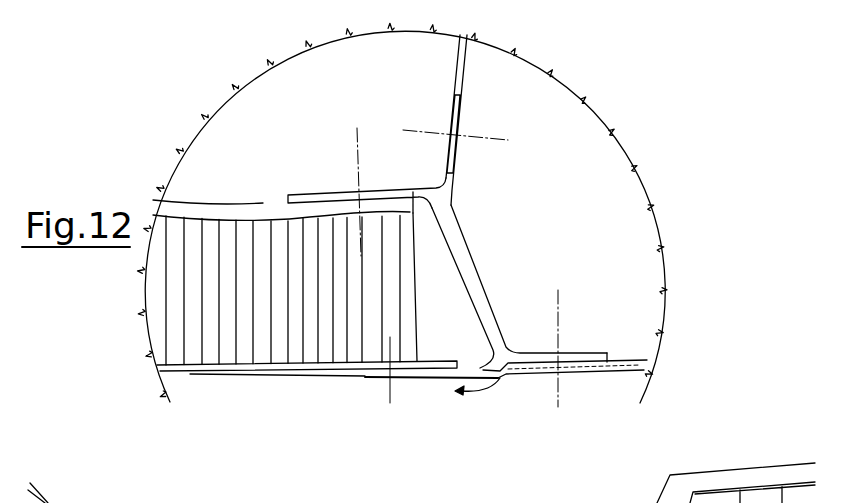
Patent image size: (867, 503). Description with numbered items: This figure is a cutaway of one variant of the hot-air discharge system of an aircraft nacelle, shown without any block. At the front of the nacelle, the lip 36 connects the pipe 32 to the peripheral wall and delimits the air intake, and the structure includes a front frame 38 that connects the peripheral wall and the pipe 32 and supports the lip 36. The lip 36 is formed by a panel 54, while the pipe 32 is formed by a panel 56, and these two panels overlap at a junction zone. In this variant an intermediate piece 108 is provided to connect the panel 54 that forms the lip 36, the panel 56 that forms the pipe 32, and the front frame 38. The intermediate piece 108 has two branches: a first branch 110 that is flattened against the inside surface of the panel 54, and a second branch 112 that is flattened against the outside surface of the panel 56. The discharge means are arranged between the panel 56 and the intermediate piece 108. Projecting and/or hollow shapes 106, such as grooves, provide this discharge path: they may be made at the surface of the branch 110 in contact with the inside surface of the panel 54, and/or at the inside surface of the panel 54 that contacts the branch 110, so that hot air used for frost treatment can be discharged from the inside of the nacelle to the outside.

The pipe 32 is at (191, 374).
The lip 36 is at (643, 375).
The front frame 38 is at (463, 58).
The panel of the lip 54 is at (593, 373).
The panel of the pipe 56 is at (287, 365).
The projecting and/or hollow shapes 106 is at (623, 362).
The intermediate piece 108 is at (483, 298).
The first branch 110 is at (583, 357).
The second branch 112 is at (452, 385).